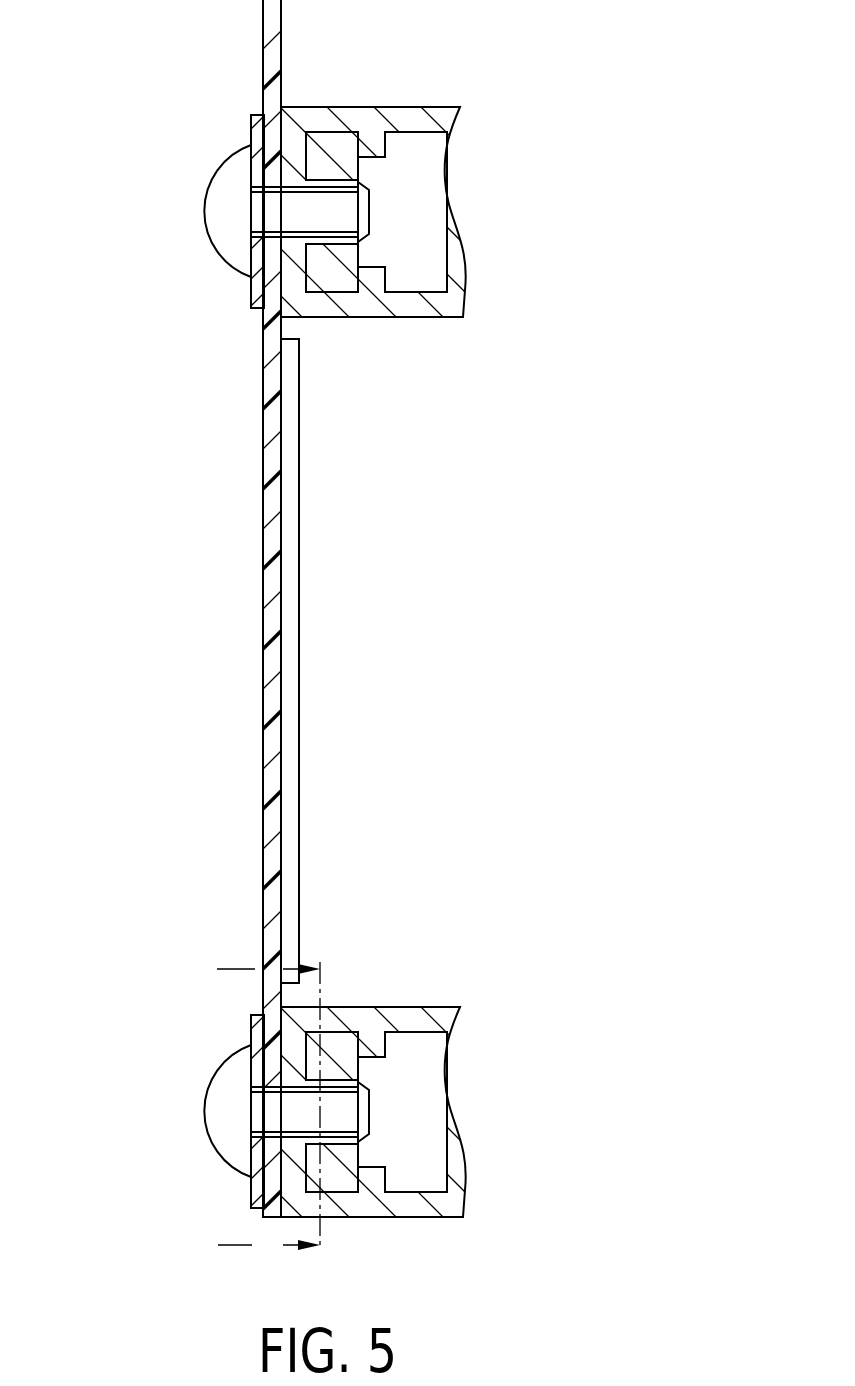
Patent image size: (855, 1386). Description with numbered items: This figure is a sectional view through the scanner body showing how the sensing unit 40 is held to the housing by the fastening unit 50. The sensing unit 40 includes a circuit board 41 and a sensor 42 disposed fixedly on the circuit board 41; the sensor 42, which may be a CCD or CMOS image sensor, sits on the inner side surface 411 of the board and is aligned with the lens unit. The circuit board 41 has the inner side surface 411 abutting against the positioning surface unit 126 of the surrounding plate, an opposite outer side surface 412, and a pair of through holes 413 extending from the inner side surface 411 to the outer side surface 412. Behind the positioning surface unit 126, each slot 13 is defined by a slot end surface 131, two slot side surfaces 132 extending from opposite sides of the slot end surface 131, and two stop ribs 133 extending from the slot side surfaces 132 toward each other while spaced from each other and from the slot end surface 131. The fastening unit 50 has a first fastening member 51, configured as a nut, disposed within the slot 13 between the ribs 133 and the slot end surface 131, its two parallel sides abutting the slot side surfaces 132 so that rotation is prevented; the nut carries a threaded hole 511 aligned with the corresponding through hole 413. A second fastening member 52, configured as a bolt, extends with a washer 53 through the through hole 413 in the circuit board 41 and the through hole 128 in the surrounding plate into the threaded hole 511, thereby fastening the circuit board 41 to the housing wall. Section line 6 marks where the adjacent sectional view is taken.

The sensing unit 40 is at (228, 636).
The circuit board 41 is at (270, 698).
The sensor 42 is at (290, 775).
The inner side surface 411 is at (275, 822).
The outer side surface 412 is at (263, 868).
The through holes 413 is at (272, 1058).
The positioning surface unit 126 is at (281, 1008).
The through holes 128 is at (268, 1068).
The slots 13 is at (363, 1077).
The slot end surface 131 is at (255, 1190).
The slot side surfaces 132 is at (350, 1188).
The stop ribs 133 is at (372, 1180).
The fastening unit 50 is at (185, 1087).
The first fastening member 51 is at (340, 1030).
The threaded hole 511 is at (360, 1073).
The second fastening member 52 is at (215, 1117).
The washer 53 is at (255, 1198).
The section line 6- 6 is at (268, 1107).